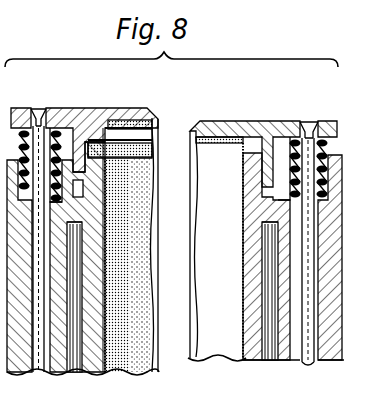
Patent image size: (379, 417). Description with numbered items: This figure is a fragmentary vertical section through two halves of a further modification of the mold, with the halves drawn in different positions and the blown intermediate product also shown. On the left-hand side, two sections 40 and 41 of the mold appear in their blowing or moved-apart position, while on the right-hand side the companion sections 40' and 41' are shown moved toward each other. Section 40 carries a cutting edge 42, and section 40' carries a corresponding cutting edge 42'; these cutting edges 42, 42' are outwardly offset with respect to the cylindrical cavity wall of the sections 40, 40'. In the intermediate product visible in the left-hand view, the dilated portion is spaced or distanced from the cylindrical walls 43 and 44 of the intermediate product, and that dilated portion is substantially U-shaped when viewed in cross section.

The mold section 41 is at (84, 129).
The cylindrical wall of the intermediate product 44 is at (130, 134).
The cutting edge 42 is at (116, 250).
The mold section 40 is at (90, 257).
The cylindrical wall of the intermediate product 43 is at (128, 265).
The companion mold section 41' is at (263, 135).
The cutting edge 42' is at (216, 245).
The companion mold section 40' is at (248, 256).